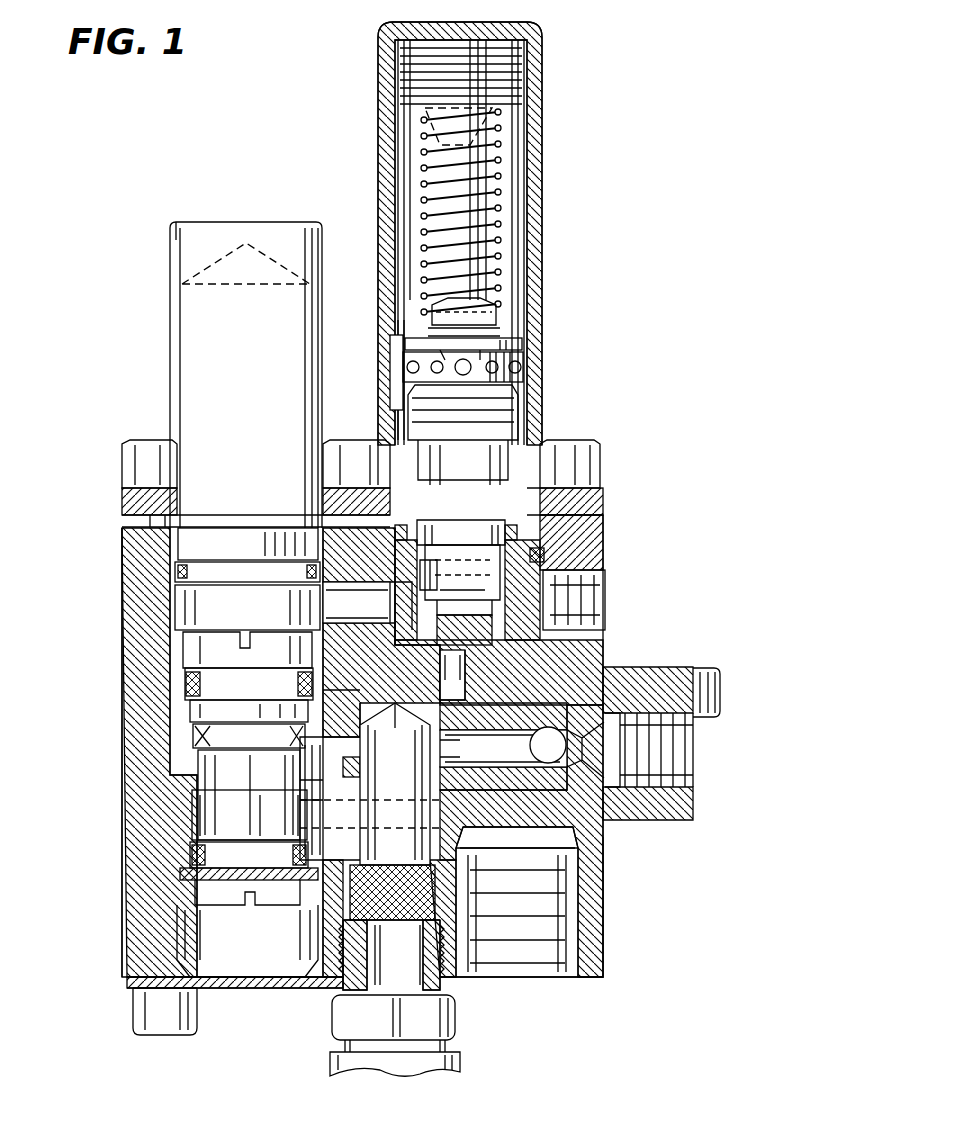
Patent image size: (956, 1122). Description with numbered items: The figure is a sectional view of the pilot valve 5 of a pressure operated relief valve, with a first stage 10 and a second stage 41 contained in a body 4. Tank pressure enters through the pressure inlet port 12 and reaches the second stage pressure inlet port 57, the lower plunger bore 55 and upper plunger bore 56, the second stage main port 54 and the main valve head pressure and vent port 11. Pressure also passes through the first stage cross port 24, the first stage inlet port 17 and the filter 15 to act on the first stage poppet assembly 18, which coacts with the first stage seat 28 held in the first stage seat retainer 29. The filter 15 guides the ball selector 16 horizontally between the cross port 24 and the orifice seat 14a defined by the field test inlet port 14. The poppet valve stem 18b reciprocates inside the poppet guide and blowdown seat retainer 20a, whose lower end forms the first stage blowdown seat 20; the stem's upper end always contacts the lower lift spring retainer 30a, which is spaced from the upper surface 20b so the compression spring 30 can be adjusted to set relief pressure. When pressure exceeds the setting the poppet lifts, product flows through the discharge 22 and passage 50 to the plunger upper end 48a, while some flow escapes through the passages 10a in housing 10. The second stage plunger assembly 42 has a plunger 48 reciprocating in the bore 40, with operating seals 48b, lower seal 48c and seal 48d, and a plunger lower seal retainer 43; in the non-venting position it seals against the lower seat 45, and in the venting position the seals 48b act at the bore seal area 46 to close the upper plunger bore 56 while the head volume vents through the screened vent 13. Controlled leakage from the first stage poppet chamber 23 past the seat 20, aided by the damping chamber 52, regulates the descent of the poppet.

The body 4 is at (130, 882).
The pilot valve 5 is at (625, 964).
The first stage 10 is at (549, 68).
The passages 10a is at (392, 360).
The main valve head pressure and vent port 11 is at (555, 980).
The pressure inlet port 12 is at (442, 987).
The screened vent 13 is at (237, 968).
The field test inlet port 14 is at (690, 755).
The orifice seat 14a is at (575, 745).
The filter 15 is at (515, 758).
The ball selector 16 is at (556, 755).
The first stage inlet port 17 is at (448, 688).
The first stage poppet assembly 18 is at (482, 620).
The poppet valve stem 18b is at (486, 348).
The first stage blowdown seat 20 is at (438, 545).
The poppet guide and blowdown seat retainer 20a is at (505, 420).
The upper surface of poppet guide 20b is at (500, 356).
The discharge 22 is at (436, 602).
The first stage poppet chamber 23 is at (535, 570).
The first stage cross port 24 is at (430, 748).
The first stage seat 28 is at (293, 988).
The first stage seat retainer 29 is at (560, 505).
The compression spring 30 is at (500, 148).
The lower lift spring retainer 30a is at (498, 310).
The bore 40 is at (195, 822).
The second stage 41 is at (120, 440).
The second stage plunger assembly 42 is at (165, 722).
The plunger lower seal retainer 43 is at (300, 912).
The lower seat 45 is at (172, 870).
The bore seal area 46 is at (198, 790).
The plunger 48 is at (185, 690).
The plunger upper end 48a is at (187, 632).
The operating seals 48b is at (195, 740).
The lower seal 48c is at (185, 852).
The seal 48d is at (178, 680).
The passage 50 is at (366, 612).
The damping chamber 52 is at (203, 326).
The second stage main port 54 is at (360, 814).
The lower plunger bore 55 is at (300, 795).
The upper plunger bore 56 is at (318, 708).
The second stage pressure inlet port 57 is at (378, 741).